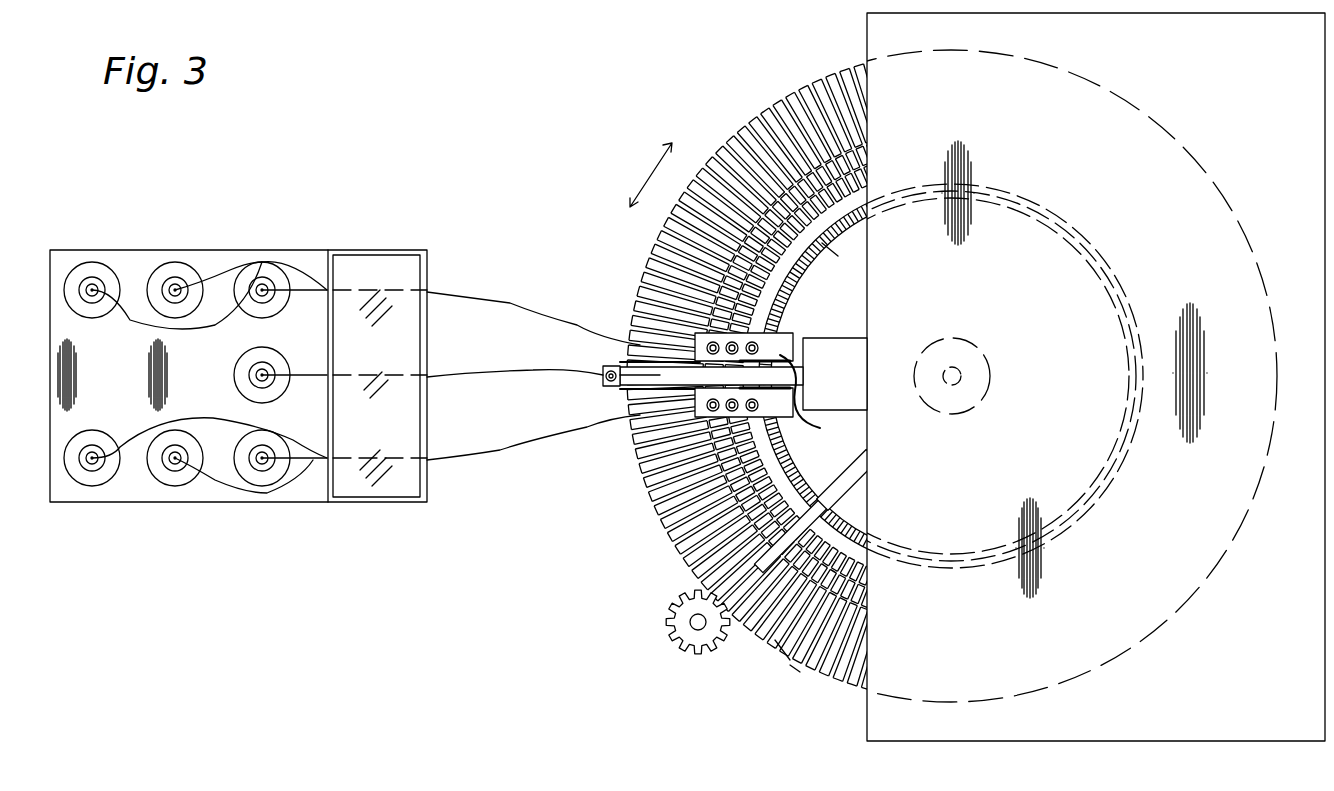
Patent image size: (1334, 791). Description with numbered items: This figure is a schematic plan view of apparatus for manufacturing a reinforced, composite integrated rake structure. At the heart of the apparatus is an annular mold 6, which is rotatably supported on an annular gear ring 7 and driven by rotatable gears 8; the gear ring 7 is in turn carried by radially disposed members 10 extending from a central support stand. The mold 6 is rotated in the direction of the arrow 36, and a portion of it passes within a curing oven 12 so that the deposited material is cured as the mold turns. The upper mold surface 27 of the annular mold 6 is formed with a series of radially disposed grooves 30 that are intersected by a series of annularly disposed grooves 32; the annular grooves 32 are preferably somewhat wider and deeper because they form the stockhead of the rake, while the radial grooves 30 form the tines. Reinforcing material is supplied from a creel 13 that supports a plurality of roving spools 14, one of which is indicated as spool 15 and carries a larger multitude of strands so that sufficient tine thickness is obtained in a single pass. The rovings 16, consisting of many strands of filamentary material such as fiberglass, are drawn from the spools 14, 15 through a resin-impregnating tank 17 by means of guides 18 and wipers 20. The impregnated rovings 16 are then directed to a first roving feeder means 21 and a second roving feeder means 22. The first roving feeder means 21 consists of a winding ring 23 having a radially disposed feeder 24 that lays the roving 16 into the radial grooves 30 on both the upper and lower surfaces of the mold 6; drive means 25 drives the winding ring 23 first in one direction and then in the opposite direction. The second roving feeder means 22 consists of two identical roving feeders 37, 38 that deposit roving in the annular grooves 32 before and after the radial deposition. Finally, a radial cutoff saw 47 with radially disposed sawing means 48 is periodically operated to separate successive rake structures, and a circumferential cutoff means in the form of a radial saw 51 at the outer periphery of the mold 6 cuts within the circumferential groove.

The annular mold 6 is at (660, 237).
The annular gear ring 7 is at (800, 283).
The rotatable gears 8 is at (827, 247).
The radially disposed members 10 is at (850, 235).
The curing oven 12 is at (1250, 668).
The creel 13 is at (134, 375).
The roving spools 14 is at (102, 262).
The roving spool 15 is at (237, 375).
The rovings 16 is at (300, 268).
The resin-impregnating tank 17 is at (378, 253).
The guides 18 is at (338, 295).
The wipers 20 is at (420, 352).
The first roving feeder means 21 is at (608, 388).
The second roving feeder means 22 is at (852, 444).
The winding ring 23 is at (640, 372).
The radially disposed feeder 24 is at (616, 388).
The drive means 25 is at (852, 390).
The upper mold surface 27 is at (838, 625).
The radially disposed grooves 30 is at (823, 646).
The annularly disposed grooves 32 is at (777, 480).
The arrow 36 is at (645, 172).
The roving feeder 37 is at (695, 344).
The roving feeder 38 is at (695, 406).
The radial cutoff saw 47 is at (860, 468).
The radially disposed sawing means 48 is at (840, 582).
The radial saw 51 is at (672, 622).